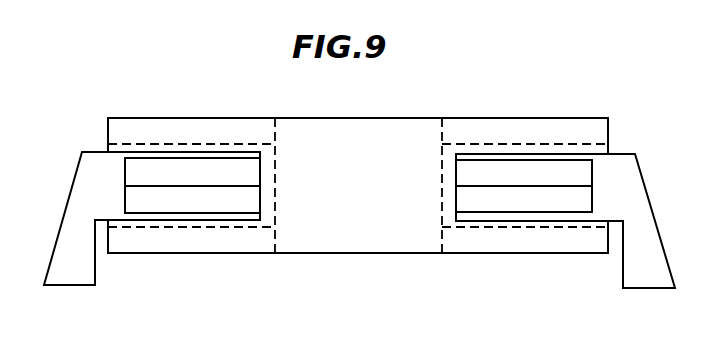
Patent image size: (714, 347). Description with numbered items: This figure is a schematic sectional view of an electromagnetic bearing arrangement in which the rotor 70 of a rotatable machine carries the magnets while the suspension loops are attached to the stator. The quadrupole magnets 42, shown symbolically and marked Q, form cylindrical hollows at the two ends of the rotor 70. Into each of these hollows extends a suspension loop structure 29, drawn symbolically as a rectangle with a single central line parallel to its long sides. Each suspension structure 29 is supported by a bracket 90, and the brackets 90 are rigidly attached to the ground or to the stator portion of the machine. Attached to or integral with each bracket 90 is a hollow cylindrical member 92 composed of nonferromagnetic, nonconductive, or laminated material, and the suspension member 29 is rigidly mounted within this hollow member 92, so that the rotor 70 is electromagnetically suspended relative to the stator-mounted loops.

The quadrupole magnet 42 is at (180, 124).
The bracket 90 is at (73, 199).
The suspension structure 29 is at (260, 180).
The hollow cylindrical member 92 is at (240, 157).
The rotor 70 is at (346, 242).